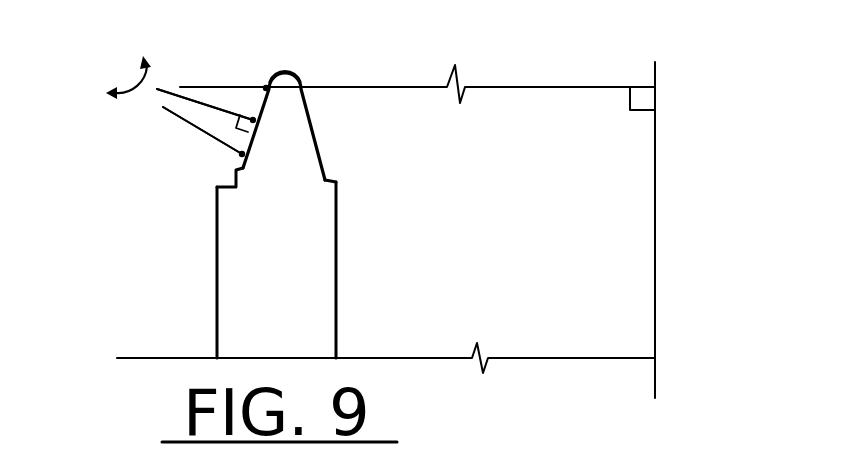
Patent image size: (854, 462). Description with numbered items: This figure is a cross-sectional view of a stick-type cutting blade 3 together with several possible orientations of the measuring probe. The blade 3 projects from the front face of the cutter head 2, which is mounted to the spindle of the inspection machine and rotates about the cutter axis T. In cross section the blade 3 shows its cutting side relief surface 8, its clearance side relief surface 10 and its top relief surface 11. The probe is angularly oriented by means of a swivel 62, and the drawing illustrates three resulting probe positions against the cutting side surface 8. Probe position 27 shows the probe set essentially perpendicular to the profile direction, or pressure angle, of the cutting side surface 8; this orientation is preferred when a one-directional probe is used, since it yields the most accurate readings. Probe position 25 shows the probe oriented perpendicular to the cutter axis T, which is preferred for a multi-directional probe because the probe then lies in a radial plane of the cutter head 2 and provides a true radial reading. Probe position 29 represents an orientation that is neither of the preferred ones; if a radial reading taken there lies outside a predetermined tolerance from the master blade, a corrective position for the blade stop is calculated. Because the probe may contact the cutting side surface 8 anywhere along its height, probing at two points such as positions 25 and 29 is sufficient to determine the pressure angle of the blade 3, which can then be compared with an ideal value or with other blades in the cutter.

The cutter head 2 is at (395, 358).
The cutting blade 3 is at (315, 285).
The cutting side relief surface 8 is at (240, 169).
The clearance side relief surface 10 is at (312, 130).
The top relief surface 11 is at (277, 72).
The probe position perpendicular to cutter axis 25 is at (241, 33).
The probe position perpendicular to cutting side surface 27 is at (157, 98).
The non-preferred probe position 29 is at (183, 122).
The swivel 62 is at (143, 85).
The cutter axis T is at (655, 283).